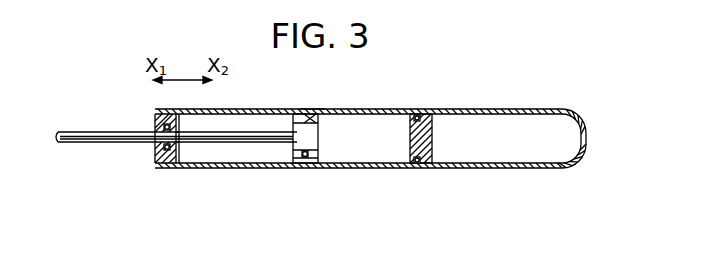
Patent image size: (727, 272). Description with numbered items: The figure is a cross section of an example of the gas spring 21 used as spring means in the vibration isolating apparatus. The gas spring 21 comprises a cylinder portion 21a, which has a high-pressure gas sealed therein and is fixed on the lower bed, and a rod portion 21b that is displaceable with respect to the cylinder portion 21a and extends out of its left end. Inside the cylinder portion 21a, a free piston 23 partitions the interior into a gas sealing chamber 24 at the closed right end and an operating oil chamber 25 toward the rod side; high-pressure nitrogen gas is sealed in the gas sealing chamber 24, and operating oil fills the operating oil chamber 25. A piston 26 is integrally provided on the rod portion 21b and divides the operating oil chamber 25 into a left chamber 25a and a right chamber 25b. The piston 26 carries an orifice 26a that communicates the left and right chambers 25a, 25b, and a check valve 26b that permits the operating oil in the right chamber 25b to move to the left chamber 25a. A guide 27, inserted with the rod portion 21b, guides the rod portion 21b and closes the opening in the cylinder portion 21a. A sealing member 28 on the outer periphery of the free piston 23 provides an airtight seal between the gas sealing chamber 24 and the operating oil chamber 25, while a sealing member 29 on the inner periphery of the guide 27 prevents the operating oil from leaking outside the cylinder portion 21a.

The gas spring 21 is at (468, 110).
The cylinder portion 21a is at (310, 110).
The rod portion 21b is at (115, 131).
The free piston 23 is at (431, 132).
The gas sealing chamber 24 is at (517, 155).
The operating oil chamber 25 is at (358, 208).
The left chamber 25a is at (275, 157).
The right chamber 25b is at (337, 157).
The piston 26 is at (286, 113).
The orifice 26a is at (316, 115).
The check valve 26b is at (306, 151).
The guide 27 is at (177, 162).
The sealing member 28 is at (418, 164).
The sealing member 29 is at (152, 149).